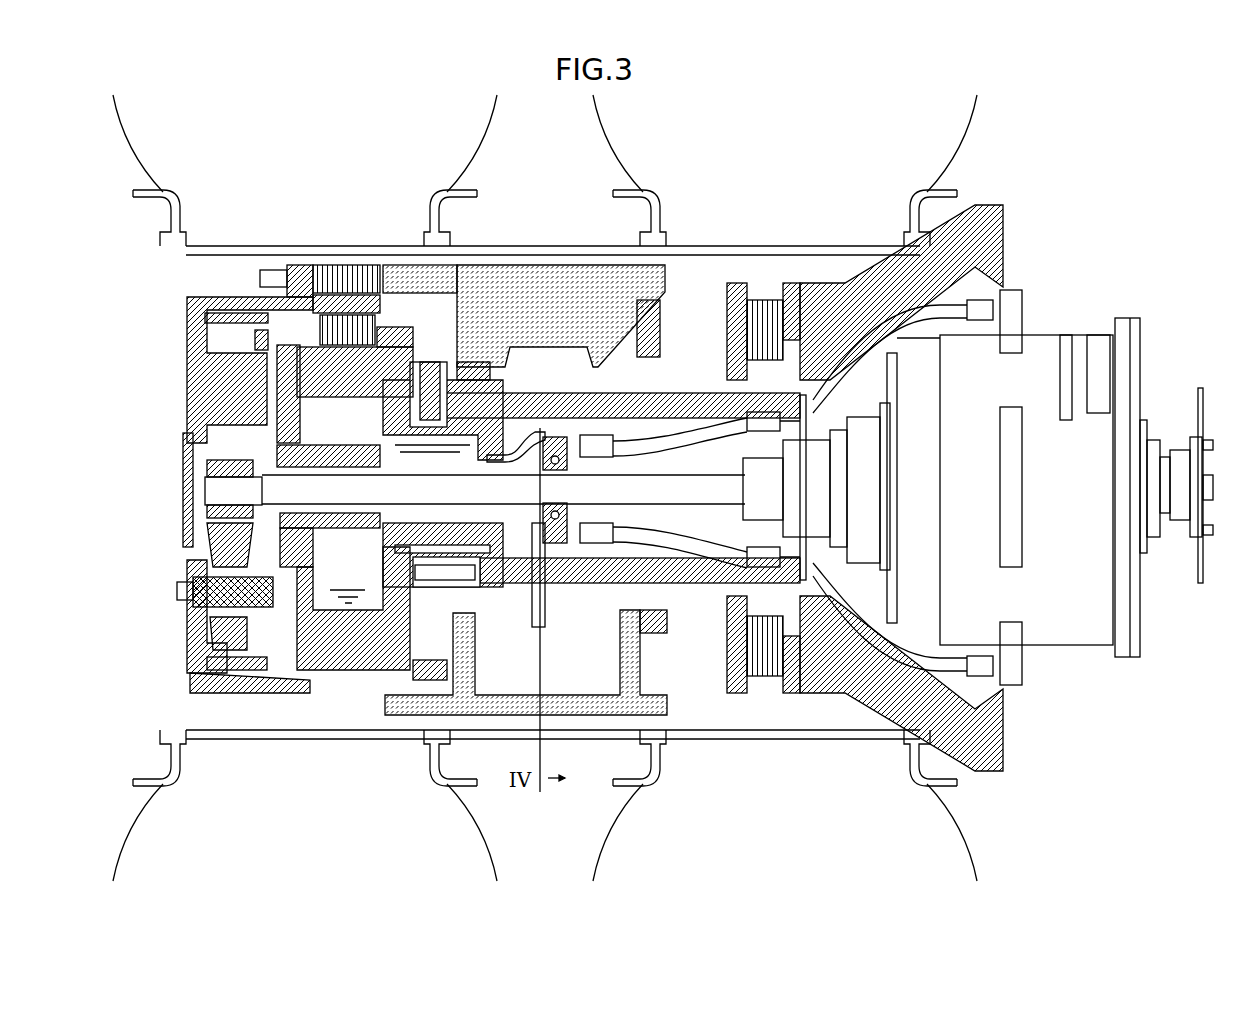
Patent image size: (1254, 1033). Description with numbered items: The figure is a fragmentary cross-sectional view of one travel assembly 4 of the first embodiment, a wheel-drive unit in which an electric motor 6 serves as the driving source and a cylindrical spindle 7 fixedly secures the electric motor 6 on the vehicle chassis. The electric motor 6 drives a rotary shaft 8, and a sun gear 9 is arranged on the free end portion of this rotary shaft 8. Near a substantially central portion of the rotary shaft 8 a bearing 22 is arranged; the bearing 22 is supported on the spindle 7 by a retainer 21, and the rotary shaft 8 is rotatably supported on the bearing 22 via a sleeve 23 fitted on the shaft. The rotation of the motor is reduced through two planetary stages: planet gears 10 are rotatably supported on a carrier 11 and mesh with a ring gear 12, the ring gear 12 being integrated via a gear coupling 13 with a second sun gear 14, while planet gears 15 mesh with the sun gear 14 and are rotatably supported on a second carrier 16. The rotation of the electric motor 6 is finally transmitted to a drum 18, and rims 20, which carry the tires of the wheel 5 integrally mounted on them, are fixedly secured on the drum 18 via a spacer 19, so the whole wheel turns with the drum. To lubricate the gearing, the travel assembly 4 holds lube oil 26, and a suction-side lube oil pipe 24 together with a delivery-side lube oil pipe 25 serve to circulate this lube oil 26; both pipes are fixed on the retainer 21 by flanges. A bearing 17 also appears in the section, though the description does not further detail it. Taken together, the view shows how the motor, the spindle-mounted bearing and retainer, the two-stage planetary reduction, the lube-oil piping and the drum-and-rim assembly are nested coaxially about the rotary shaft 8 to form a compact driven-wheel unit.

The travel assembly 4 is at (1010, 210).
The wheel 5 is at (950, 130).
The electric motor 6 is at (1063, 628).
The cylindrical spindle 7 is at (1002, 250).
The rotary shaft 8 is at (637, 483).
The sun gear 9 is at (210, 475).
The planet gears 10 is at (213, 550).
The carrier 11 is at (187, 378).
The ring gear 12 is at (207, 663).
The gear coupling 13 is at (267, 350).
The sun gear 14 is at (333, 533).
The planet gears 15 is at (280, 433).
The carrier 16 is at (257, 680).
The bearing 17 is at (337, 280).
The drum 18 is at (415, 277).
The spacer 19 is at (563, 257).
The rims 20 is at (958, 188).
The retainer 21 is at (545, 437).
The bearing 22 is at (583, 440).
The sleeve 23 is at (690, 375).
The suction-side lube oil pipe 24 is at (520, 635).
The delivery-side lube oil pipe 25 is at (487, 467).
The lube oil 26 is at (433, 673).